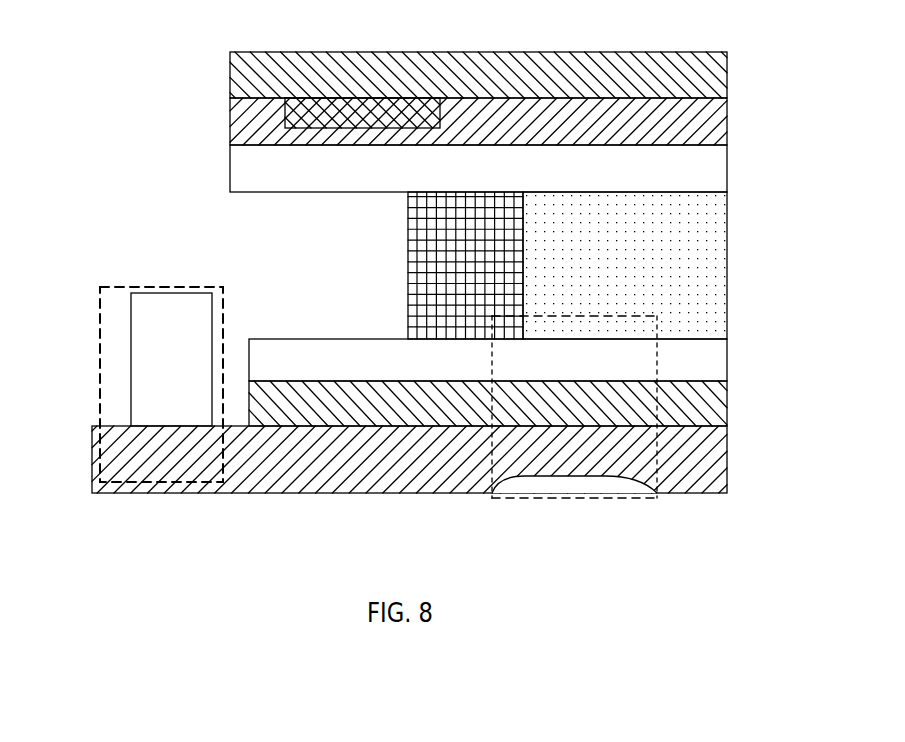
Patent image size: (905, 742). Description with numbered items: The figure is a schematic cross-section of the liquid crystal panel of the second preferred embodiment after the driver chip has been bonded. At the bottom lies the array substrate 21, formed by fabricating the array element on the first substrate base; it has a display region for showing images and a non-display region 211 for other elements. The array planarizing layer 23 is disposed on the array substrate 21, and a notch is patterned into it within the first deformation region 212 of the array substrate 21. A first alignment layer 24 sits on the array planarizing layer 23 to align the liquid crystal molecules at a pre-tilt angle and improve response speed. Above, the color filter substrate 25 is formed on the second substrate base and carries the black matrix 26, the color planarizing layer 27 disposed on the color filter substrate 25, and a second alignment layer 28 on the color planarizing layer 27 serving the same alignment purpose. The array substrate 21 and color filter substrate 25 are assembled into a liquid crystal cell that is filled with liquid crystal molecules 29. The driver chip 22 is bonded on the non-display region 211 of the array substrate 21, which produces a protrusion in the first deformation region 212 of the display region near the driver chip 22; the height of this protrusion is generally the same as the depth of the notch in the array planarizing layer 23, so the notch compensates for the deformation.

The array substrate 21 is at (700, 476).
The non-display region 211 is at (118, 400).
The first deformation region 212 is at (632, 327).
The driver chip 22 is at (145, 316).
The array planarizing layer 23 is at (703, 417).
The first alignment layer 24 is at (687, 365).
The color filter substrate 25 is at (702, 75).
The black matrix 26 is at (333, 115).
The color planarizing layer 27 is at (703, 130).
The second alignment layer 28 is at (700, 178).
The liquid crystal molecules 29 is at (692, 258).